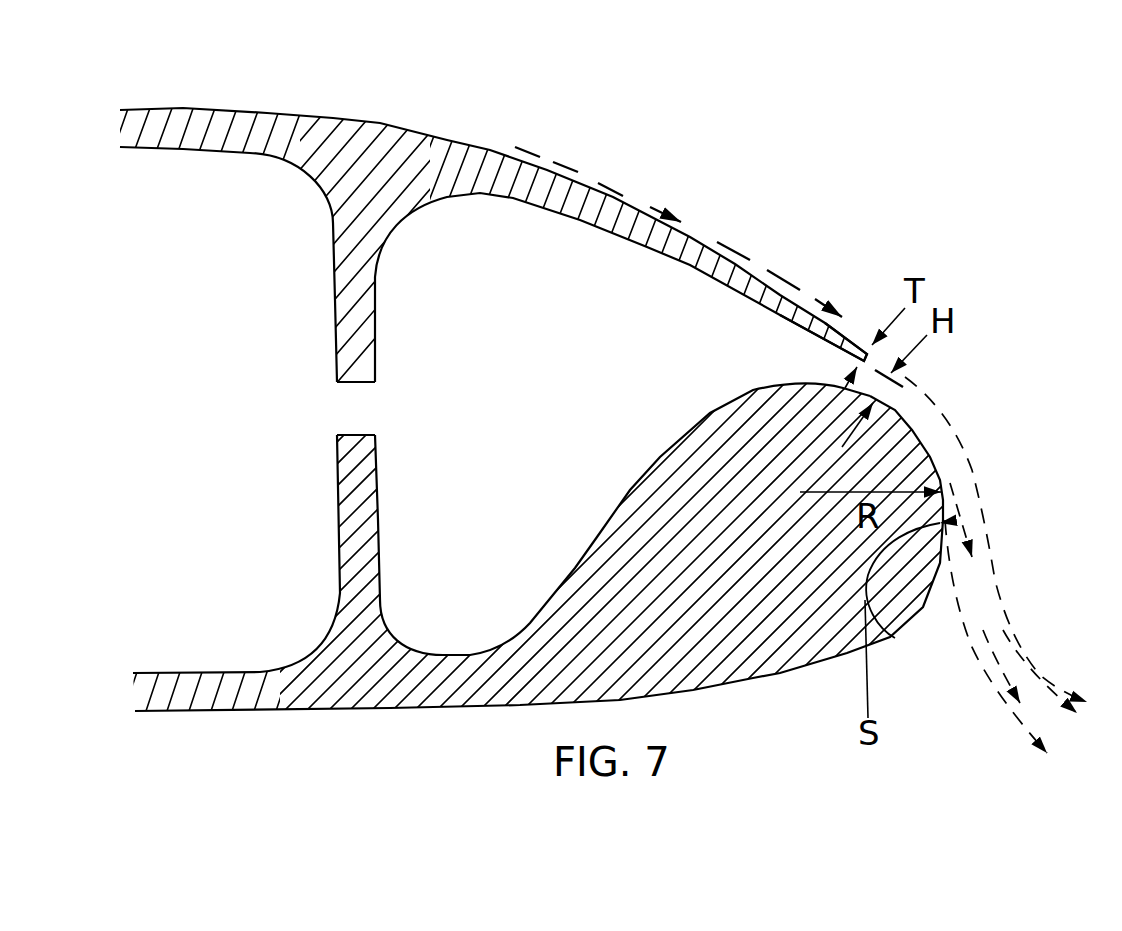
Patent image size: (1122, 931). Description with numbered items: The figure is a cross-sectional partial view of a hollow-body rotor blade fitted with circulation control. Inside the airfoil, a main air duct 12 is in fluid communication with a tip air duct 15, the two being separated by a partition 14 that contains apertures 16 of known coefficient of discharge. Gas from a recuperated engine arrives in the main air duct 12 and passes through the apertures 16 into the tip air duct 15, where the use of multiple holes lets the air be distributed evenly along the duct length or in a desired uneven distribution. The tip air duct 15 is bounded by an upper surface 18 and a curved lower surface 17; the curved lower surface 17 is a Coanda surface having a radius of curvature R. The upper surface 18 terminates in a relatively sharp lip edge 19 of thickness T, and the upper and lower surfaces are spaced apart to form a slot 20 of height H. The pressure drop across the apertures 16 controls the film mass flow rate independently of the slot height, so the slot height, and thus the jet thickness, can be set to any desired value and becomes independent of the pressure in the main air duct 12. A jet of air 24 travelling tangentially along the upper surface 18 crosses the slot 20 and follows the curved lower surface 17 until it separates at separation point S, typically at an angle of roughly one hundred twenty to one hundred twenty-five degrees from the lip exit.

The main air duct 12 is at (278, 548).
The partition 14 is at (378, 330).
The tip air duct 15 is at (450, 536).
The apertures 16 is at (387, 410).
The curved lower surface 17 is at (743, 680).
The upper surface 18 is at (380, 127).
The lip edge 19 is at (870, 357).
The slot 20 is at (840, 363).
The jet of air 24 is at (598, 181).